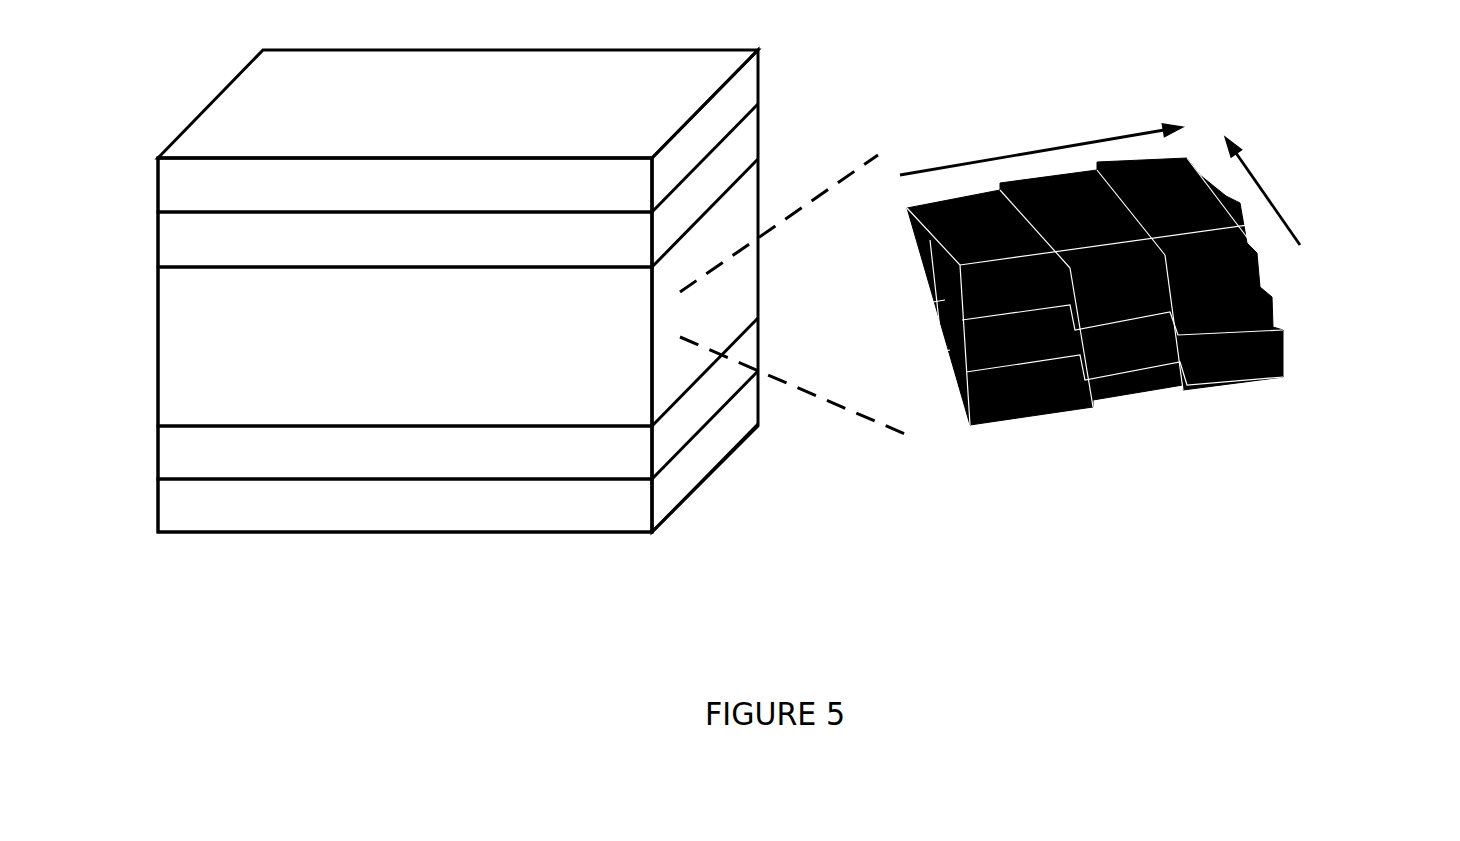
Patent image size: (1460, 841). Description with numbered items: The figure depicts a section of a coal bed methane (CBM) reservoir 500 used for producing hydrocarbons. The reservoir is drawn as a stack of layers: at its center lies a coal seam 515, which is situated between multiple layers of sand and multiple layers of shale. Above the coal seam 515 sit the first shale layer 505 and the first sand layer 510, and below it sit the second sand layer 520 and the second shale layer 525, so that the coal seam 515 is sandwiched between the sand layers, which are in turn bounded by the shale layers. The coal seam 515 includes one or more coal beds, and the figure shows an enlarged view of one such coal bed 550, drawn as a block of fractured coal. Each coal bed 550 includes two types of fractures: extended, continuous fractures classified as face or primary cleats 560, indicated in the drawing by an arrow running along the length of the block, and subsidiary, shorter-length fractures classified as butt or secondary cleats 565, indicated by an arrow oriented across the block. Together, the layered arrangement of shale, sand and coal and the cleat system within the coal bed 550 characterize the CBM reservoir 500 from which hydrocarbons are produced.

The coal bed methane (CBM) reservoir 500 is at (428, 339).
The Shale Layer 1 505 is at (458, 158).
The Sand Layer 1 510 is at (458, 213).
The coal seam 515 is at (458, 346).
The Sand Layer 2 520 is at (458, 425).
The Shale Layer 2 525 is at (458, 478).
The coal bed 550 is at (955, 438).
The face (primary) cleats 560 is at (972, 149).
The butt (secondary) cleats 565 is at (1308, 220).